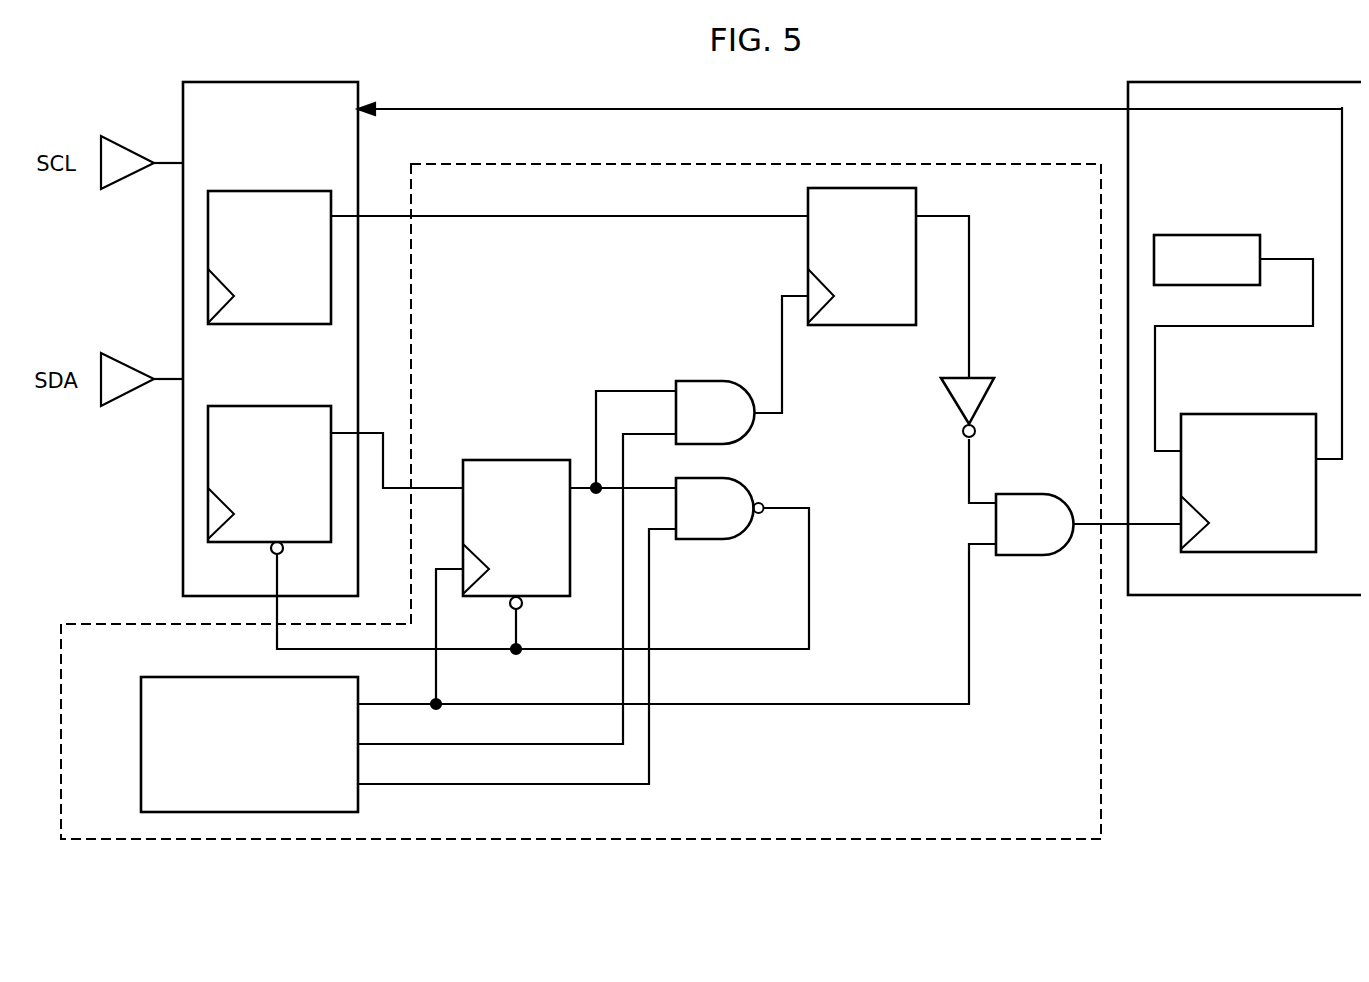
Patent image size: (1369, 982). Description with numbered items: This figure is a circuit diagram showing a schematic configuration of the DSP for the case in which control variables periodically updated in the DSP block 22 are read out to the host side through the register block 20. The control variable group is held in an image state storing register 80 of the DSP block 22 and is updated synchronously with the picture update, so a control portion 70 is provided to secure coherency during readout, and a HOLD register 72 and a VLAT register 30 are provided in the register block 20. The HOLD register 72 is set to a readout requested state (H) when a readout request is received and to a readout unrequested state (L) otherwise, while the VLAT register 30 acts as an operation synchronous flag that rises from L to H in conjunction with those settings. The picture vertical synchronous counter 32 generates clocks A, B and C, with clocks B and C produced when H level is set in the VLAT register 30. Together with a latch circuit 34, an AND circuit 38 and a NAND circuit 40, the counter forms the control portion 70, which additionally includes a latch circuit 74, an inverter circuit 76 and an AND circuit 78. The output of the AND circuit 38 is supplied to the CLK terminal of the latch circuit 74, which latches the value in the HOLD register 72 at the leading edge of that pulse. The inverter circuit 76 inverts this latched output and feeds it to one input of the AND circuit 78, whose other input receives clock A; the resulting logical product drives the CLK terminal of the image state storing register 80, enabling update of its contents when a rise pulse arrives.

The register block 20 is at (182, 103).
The HOLD register 72 is at (207, 251).
The VLAT register 30 is at (207, 467).
The latch circuit 34 is at (513, 459).
The AND circuit 38 is at (700, 380).
The NAND circuit 40 is at (700, 540).
The latch circuit 74 is at (858, 326).
The inverter circuit 76 is at (960, 404).
The AND circuit 78 is at (1020, 557).
The image state storing register 80 is at (1229, 412).
The DSP block 22 is at (1232, 597).
The picture vertical synchronous counter 32 is at (140, 735).
The control portion 70 is at (1100, 728).